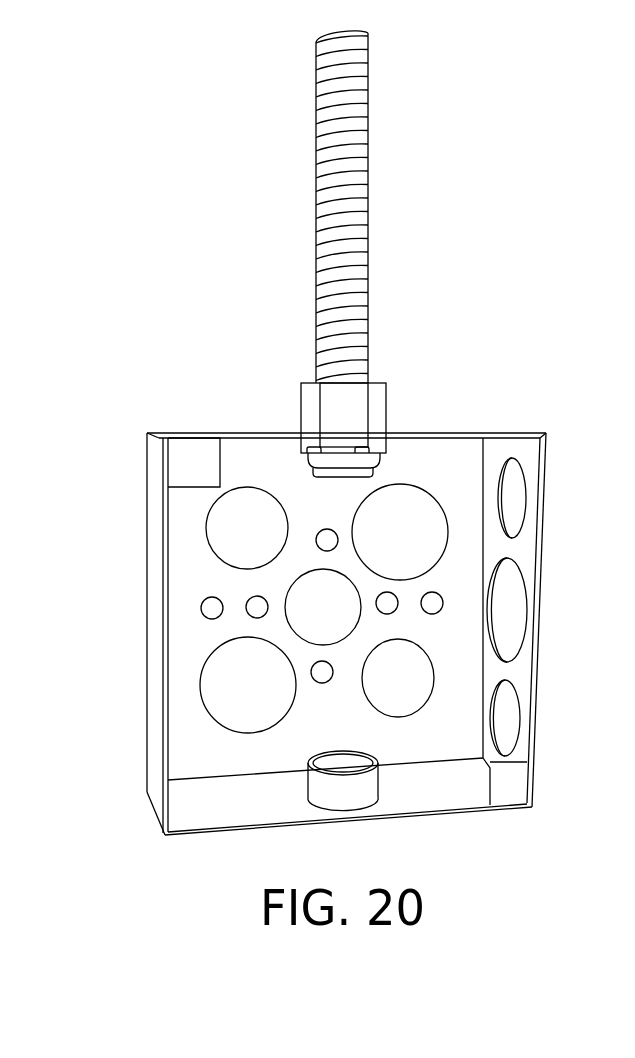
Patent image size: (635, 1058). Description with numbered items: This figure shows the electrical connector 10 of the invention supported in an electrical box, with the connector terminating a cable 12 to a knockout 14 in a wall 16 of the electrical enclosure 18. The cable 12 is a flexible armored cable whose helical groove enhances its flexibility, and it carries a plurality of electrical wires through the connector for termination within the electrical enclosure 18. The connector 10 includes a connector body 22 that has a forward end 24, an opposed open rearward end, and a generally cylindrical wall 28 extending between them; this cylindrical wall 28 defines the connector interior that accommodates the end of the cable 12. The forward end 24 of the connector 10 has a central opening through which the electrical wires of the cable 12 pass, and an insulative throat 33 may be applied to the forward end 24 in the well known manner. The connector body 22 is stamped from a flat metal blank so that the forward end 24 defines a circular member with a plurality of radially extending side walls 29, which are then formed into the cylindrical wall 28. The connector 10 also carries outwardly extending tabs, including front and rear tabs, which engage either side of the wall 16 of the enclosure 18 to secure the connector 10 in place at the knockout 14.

The electrical connector 10 is at (384, 361).
The cable 12 is at (352, 224).
The knockout 14 is at (335, 590).
The wall 16 is at (193, 432).
The electrical enclosure 18 is at (525, 557).
The connector body 22 is at (386, 408).
The forward end 24 is at (307, 455).
The cylindrical wall 28 is at (312, 425).
The side walls 29 is at (342, 407).
The insulative throat 33 is at (378, 473).